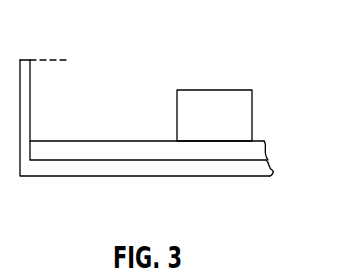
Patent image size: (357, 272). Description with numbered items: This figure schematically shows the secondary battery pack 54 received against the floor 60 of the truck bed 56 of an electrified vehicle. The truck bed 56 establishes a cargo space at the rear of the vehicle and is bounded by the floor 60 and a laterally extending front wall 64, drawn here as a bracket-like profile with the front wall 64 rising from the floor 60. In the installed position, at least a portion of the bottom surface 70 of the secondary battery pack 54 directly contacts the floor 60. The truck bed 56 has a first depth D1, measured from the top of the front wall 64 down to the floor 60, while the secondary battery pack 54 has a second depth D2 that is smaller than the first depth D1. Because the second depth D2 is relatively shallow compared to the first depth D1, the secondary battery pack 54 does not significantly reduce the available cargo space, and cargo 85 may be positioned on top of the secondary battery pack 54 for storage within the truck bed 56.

The secondary battery pack 54 is at (149, 136).
The truck bed 56 is at (96, 112).
The floor 60 is at (165, 168).
The front wall 64 is at (23, 59).
The bottom surface 70 is at (143, 160).
The cargo 85 is at (208, 103).
The first depth D1 is at (42, 152).
The second depth D2 is at (107, 118).